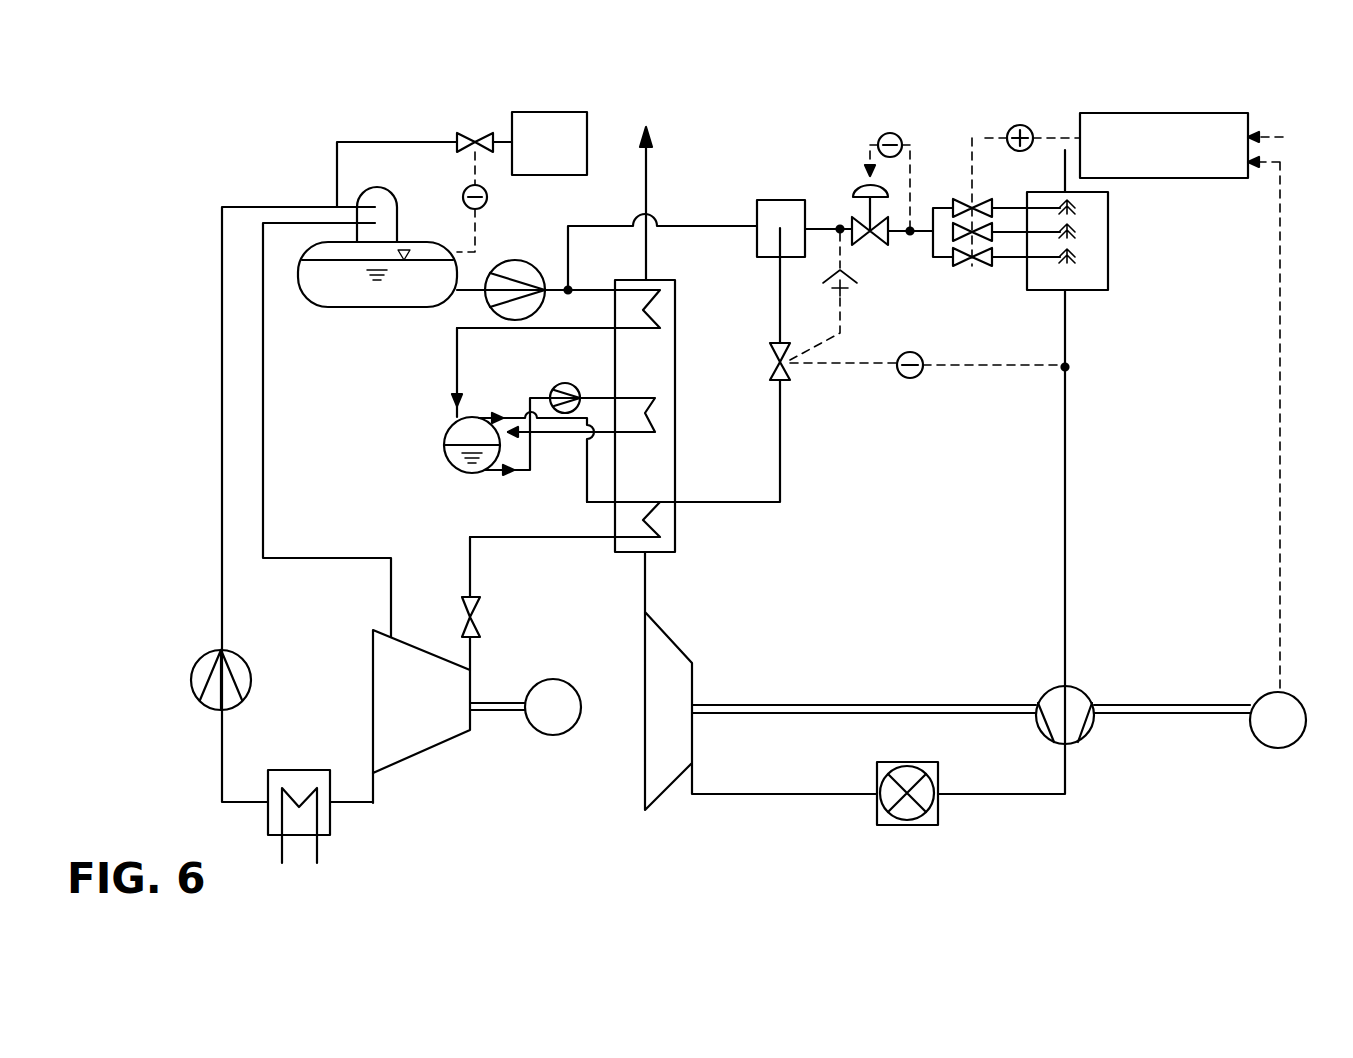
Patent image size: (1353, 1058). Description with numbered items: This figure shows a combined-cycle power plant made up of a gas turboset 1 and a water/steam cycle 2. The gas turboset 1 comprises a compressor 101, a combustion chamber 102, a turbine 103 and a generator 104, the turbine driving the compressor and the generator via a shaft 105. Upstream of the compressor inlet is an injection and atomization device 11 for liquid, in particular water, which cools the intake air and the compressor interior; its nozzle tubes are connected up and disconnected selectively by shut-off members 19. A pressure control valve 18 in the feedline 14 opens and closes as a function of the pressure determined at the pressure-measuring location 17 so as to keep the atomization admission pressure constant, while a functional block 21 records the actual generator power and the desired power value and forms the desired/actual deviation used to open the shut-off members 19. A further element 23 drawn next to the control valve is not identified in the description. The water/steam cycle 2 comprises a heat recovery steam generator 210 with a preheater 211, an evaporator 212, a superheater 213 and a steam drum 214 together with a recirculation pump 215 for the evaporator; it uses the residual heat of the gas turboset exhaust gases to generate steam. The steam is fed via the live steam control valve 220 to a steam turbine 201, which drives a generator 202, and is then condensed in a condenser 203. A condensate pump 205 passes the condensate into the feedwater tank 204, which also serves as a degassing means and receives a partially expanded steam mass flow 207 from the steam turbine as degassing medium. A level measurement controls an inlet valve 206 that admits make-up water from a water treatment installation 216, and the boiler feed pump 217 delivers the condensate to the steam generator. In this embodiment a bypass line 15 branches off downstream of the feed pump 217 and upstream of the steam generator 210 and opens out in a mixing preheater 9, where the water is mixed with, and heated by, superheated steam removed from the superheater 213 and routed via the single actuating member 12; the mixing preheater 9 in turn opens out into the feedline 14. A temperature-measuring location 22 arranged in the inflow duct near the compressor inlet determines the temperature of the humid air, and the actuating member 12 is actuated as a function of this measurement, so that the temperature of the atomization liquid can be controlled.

The gas turboset 1 is at (882, 667).
The water/steam cycle 2 is at (355, 430).
The mixing preheater 9 is at (768, 200).
The injection and atomization device 11 is at (1108, 280).
The actuating member 12 is at (773, 363).
The feedline 14 is at (818, 228).
The bypass line 15 is at (603, 226).
The pressure-measuring location 17 is at (910, 233).
The pressure control valve 18 is at (860, 243).
The shut-off members 19 is at (985, 265).
The functional block 21 is at (1158, 178).
The temperature-measuring location 22 is at (1067, 368).
The pressure sensor 23 is at (840, 227).
The compressor 101 is at (1078, 743).
The combustion chamber 102 is at (937, 807).
The turbine 103 is at (668, 787).
The generator 104 is at (1277, 752).
The shaft 105 is at (957, 705).
The steam turbine 201 is at (453, 740).
The generator 202 is at (560, 733).
The condenser 203 is at (330, 820).
The feedwater tank 204 is at (352, 307).
The condensate pump 205 is at (192, 672).
The inlet valve 206 is at (462, 132).
The partially expanded steam mass flow 207 is at (262, 490).
The heat recovery steam generator 210 is at (677, 450).
The preheater 211 is at (650, 302).
The evaporator 212 is at (655, 408).
The superheater 213 is at (655, 518).
The steam drum 214 is at (470, 473).
The recirculation pump 215 is at (567, 382).
The water treatment installation 216 is at (571, 159).
The boiler feed pump 217 is at (515, 260).
The live steam control valve 220 is at (473, 610).